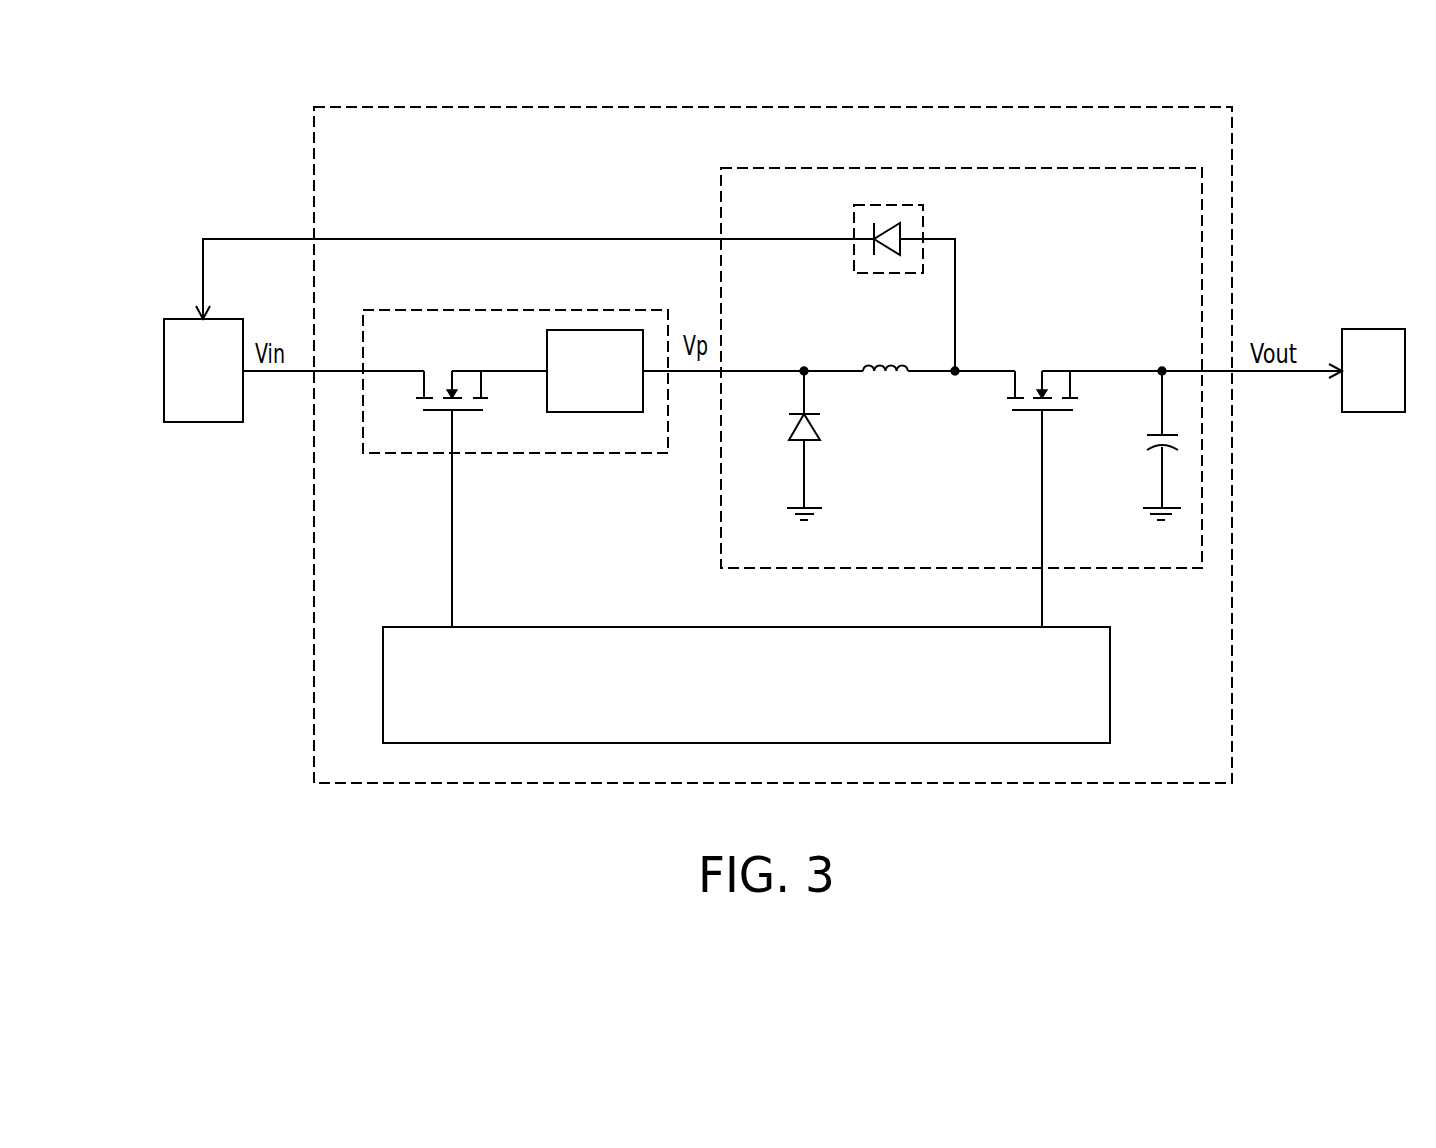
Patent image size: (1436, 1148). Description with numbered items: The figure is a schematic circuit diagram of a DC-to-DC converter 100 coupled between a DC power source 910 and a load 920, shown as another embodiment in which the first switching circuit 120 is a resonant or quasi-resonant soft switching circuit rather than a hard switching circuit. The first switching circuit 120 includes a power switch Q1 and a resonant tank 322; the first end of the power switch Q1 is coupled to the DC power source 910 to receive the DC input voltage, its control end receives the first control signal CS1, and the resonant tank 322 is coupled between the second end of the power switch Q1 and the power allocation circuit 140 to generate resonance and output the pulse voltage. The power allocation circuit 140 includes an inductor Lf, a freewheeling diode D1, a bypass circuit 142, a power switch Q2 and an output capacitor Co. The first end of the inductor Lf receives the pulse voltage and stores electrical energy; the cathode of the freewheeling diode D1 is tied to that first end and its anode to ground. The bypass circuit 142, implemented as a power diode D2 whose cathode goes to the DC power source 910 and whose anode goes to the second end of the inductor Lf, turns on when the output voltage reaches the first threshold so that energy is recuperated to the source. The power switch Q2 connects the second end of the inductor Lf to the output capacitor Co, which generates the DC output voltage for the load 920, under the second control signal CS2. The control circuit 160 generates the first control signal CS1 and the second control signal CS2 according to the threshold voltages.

The DC-to-DC converter 100 is at (1100, 783).
The first switching circuit 120 is at (492, 310).
The resonant tank 322 is at (578, 412).
The power allocation circuit 140 is at (1068, 168).
The bypass circuit 142 is at (933, 199).
The control circuit 160 is at (1110, 685).
The DC power source 910 is at (203, 422).
The load 920 is at (1373, 412).
The power switch Q1 is at (450, 367).
The power switch Q2 is at (1042, 363).
The freewheeling diode D1 is at (788, 463).
The power diode D2 is at (888, 218).
The inductor Lf is at (886, 407).
The output capacitor Co is at (1146, 463).
The first control signal CS1 is at (453, 539).
The second control signal CS2 is at (1042, 610).